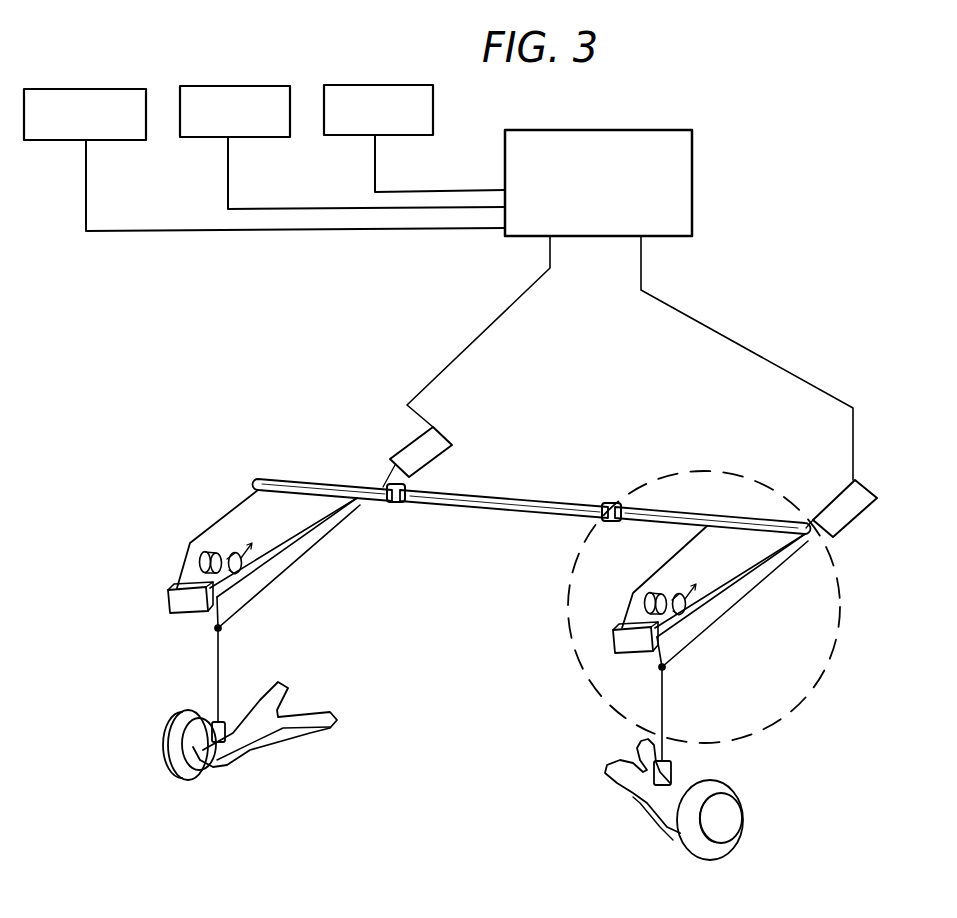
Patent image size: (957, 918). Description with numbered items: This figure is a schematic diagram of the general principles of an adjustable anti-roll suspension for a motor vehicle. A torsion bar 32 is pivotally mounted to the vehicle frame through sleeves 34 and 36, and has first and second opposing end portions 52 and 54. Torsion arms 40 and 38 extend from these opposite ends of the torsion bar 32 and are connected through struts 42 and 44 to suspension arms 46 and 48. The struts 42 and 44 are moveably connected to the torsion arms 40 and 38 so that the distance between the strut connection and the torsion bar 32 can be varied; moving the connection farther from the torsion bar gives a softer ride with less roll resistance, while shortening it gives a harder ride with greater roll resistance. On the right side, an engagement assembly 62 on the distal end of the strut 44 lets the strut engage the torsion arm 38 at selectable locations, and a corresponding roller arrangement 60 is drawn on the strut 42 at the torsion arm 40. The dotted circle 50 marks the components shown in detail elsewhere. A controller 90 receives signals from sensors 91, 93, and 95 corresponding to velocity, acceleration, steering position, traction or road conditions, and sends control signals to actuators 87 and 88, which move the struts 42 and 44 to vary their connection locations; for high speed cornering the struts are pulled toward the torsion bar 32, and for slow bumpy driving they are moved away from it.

The torsion bar 32 is at (550, 506).
The sleeve 34 is at (398, 504).
The sleeve 36 is at (612, 503).
The torsion arm 38 is at (665, 568).
The torsion arm 40 is at (240, 508).
The strut 42 is at (219, 666).
The strut 44 is at (663, 698).
The suspension arm 46 is at (340, 712).
The suspension arm 48 is at (640, 802).
The dotted circle 50 is at (832, 655).
The first end portion 52 is at (757, 522).
The second end portion 54 is at (286, 480).
The left roller 60 is at (222, 548).
The engagement assembly 62 is at (695, 593).
The actuator 87 is at (441, 409).
The actuator 88 is at (868, 490).
The controller 90 is at (692, 193).
The sensor 91 is at (108, 140).
The sensor 93 is at (263, 137).
The sensor 95 is at (395, 135).